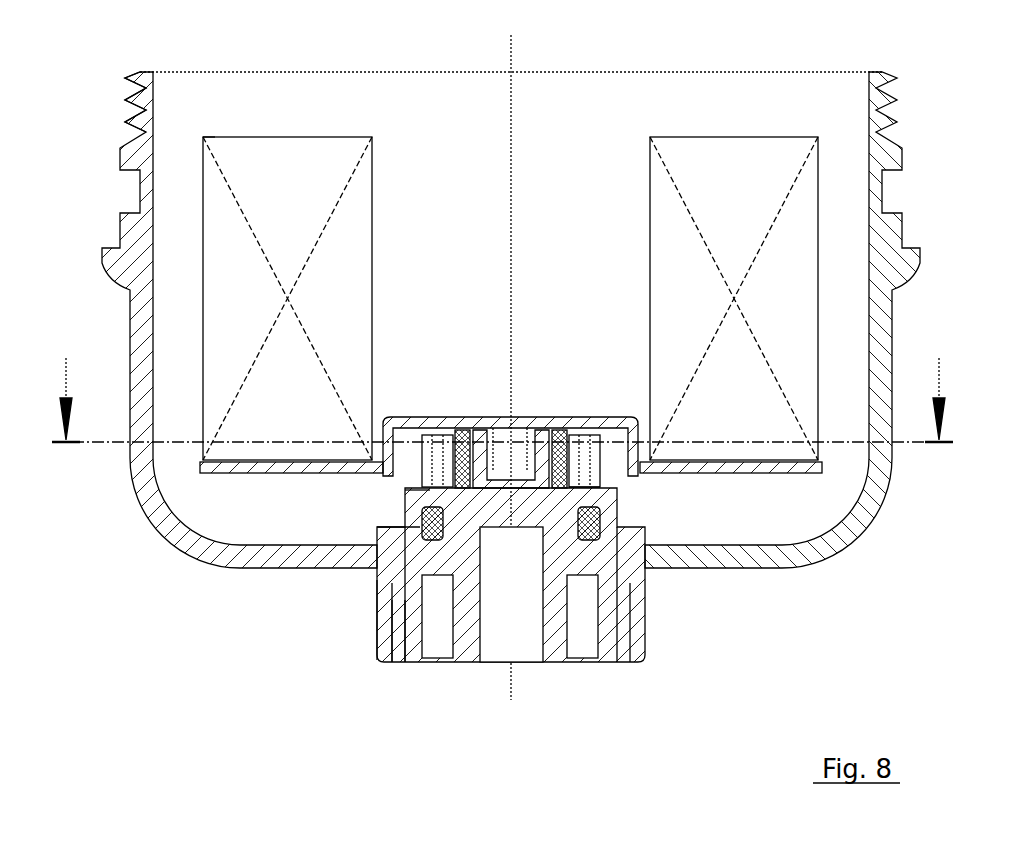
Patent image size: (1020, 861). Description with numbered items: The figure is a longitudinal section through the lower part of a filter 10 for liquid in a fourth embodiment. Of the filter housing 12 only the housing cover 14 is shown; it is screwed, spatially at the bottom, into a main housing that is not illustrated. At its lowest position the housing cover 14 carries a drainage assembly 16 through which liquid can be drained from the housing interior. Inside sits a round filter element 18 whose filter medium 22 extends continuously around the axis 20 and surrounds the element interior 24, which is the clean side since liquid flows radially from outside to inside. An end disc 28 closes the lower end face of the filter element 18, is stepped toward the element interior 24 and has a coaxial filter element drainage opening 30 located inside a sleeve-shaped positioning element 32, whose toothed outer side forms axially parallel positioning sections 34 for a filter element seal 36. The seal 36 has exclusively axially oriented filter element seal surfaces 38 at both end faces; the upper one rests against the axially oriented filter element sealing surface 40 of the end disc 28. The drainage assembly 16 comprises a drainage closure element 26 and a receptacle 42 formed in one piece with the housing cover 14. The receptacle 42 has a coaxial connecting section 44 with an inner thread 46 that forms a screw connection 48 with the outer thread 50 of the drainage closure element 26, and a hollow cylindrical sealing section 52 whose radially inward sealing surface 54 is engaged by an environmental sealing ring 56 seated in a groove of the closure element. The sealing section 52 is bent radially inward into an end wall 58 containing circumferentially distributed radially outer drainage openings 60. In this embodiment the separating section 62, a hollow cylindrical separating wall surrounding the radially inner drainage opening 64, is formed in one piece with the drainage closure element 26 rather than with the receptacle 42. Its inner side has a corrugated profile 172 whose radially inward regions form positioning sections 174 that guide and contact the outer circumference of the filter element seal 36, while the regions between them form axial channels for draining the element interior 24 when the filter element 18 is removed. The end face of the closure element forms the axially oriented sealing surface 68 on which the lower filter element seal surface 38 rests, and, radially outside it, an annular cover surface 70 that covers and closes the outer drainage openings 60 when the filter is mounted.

The filter 10 is at (103, 58).
The filter housing 12 is at (128, 121).
The housing cover 14 is at (125, 165).
The drainage assembly 16 is at (355, 580).
The filter element 18 is at (240, 155).
The axis 20 is at (511, 52).
The filter medium 22 is at (266, 175).
The element interior 24 is at (613, 180).
The drainage closure element 26 is at (557, 665).
The end disc 28 is at (200, 465).
The filter element drainage opening 30 is at (495, 427).
The positioning element 32 is at (480, 420).
The positioning sections 34 is at (450, 432).
The filter element seal 36 is at (557, 430).
The filter element seal surface 38 is at (465, 423).
The filter element sealing surface 40 is at (530, 460).
The receptacle 42 is at (373, 598).
The connecting section 44 is at (385, 618).
The inner thread 46 is at (402, 608).
The screw connection 48 is at (400, 652).
The outer thread 50 is at (402, 630).
The sealing section 52 is at (418, 507).
The sealing surface 54 is at (420, 527).
The environmental sealing ring 56 is at (600, 512).
The end wall 58 is at (421, 450).
The radially outer drainage openings 60 is at (600, 440).
The separating section 62 is at (597, 452).
The radially inner drainage opening 64 is at (590, 580).
The sealing surface 68 is at (467, 572).
The cover surface 70 is at (427, 490).
The corrugated profile 172 is at (578, 458).
The positioning sections 174 is at (570, 467).